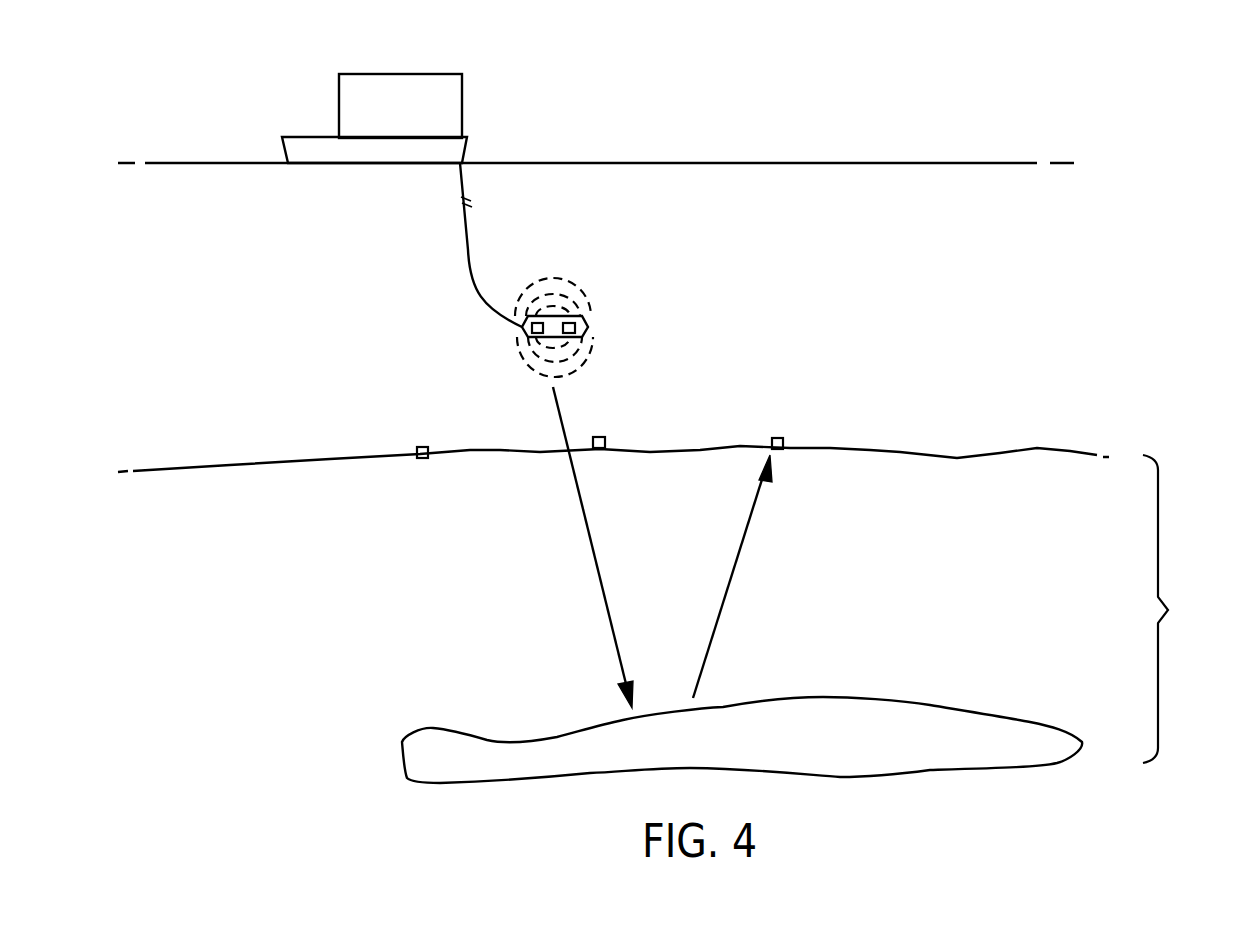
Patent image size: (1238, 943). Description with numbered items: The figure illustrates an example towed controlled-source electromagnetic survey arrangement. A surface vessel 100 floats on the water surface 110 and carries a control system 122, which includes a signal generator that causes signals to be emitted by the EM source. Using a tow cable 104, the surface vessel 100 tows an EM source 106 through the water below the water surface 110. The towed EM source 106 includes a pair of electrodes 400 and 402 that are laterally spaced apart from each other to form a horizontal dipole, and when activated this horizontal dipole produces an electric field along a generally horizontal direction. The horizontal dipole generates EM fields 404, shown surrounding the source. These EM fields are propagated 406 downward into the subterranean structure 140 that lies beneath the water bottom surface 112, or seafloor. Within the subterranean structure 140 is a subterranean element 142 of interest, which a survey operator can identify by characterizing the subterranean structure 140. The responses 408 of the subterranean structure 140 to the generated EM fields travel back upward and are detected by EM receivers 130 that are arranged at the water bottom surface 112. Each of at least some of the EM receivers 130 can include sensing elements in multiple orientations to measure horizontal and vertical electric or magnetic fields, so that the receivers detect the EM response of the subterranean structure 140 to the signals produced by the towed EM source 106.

The surface vessel 100 is at (503, 62).
The tow cable 104 is at (468, 262).
The EM source 106 is at (553, 338).
The water surface 110 is at (583, 163).
The water bottom surface 112 is at (937, 455).
The control system 122 is at (404, 74).
The EM receivers 130 is at (423, 460).
The subterranean structure 140 is at (1181, 609).
The subterranean element 142 is at (830, 710).
The electrode 400 is at (527, 318).
The electrode 402 is at (583, 318).
The EM fields 404 is at (591, 353).
The propagation of EM fields 406 is at (603, 584).
The responses 408 is at (733, 578).